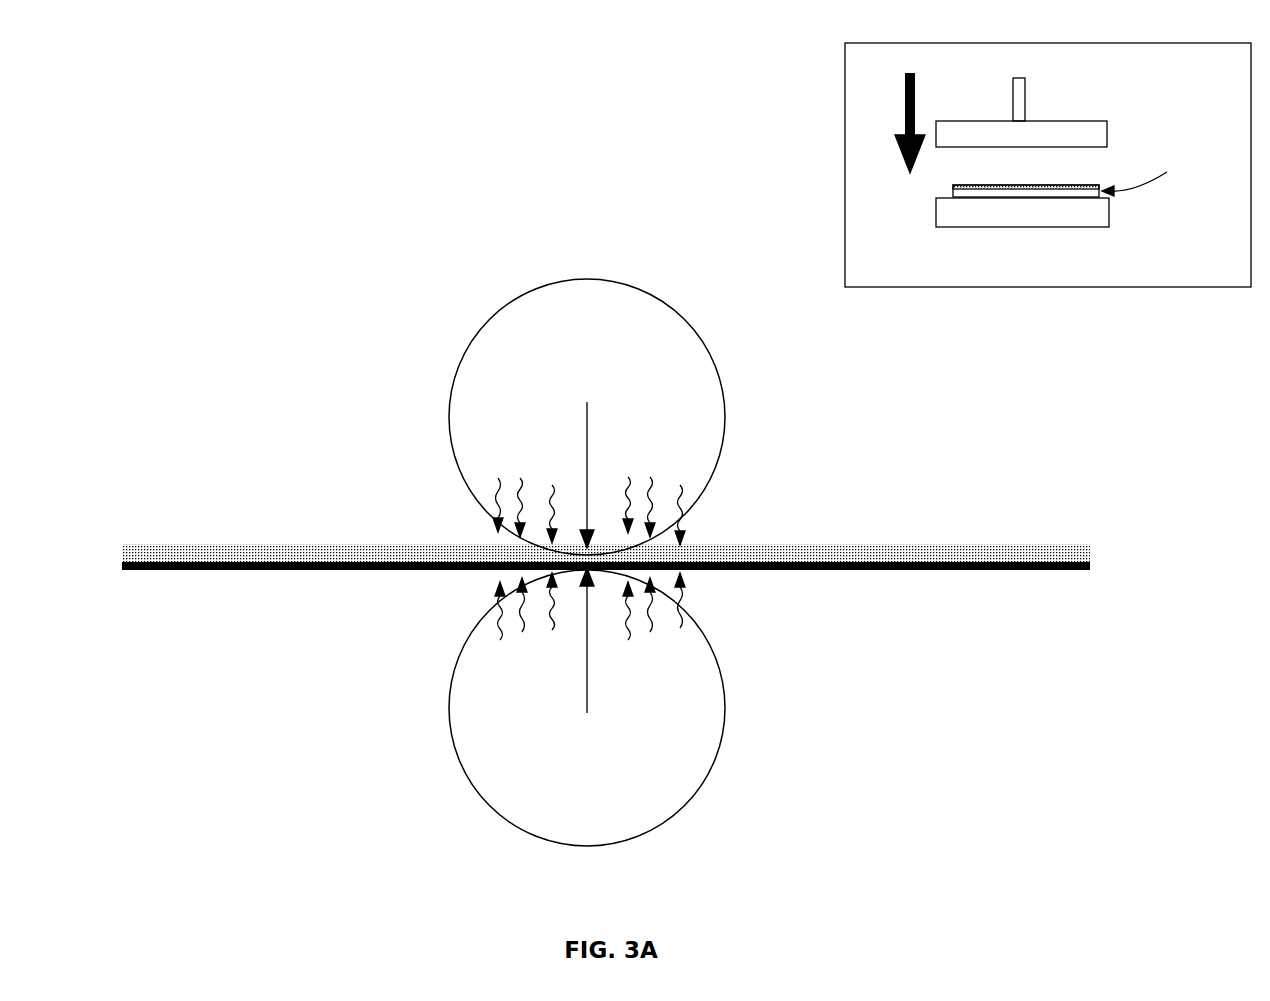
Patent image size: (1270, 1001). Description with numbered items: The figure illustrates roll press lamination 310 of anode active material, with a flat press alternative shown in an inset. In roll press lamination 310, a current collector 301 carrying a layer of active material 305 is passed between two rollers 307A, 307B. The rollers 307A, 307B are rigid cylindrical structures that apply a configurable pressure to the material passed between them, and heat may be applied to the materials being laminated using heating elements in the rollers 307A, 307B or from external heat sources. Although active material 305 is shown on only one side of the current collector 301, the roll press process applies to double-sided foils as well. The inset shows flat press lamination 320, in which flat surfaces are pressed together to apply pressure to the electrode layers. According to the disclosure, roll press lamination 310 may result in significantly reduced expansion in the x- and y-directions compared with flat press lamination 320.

The roll press lamination 310 is at (606, 561).
The roller 307A is at (593, 278).
The roller 307B is at (512, 826).
The active material 305 is at (312, 543).
The current collector 301 is at (293, 572).
The flat press lamination 320 is at (1048, 165).